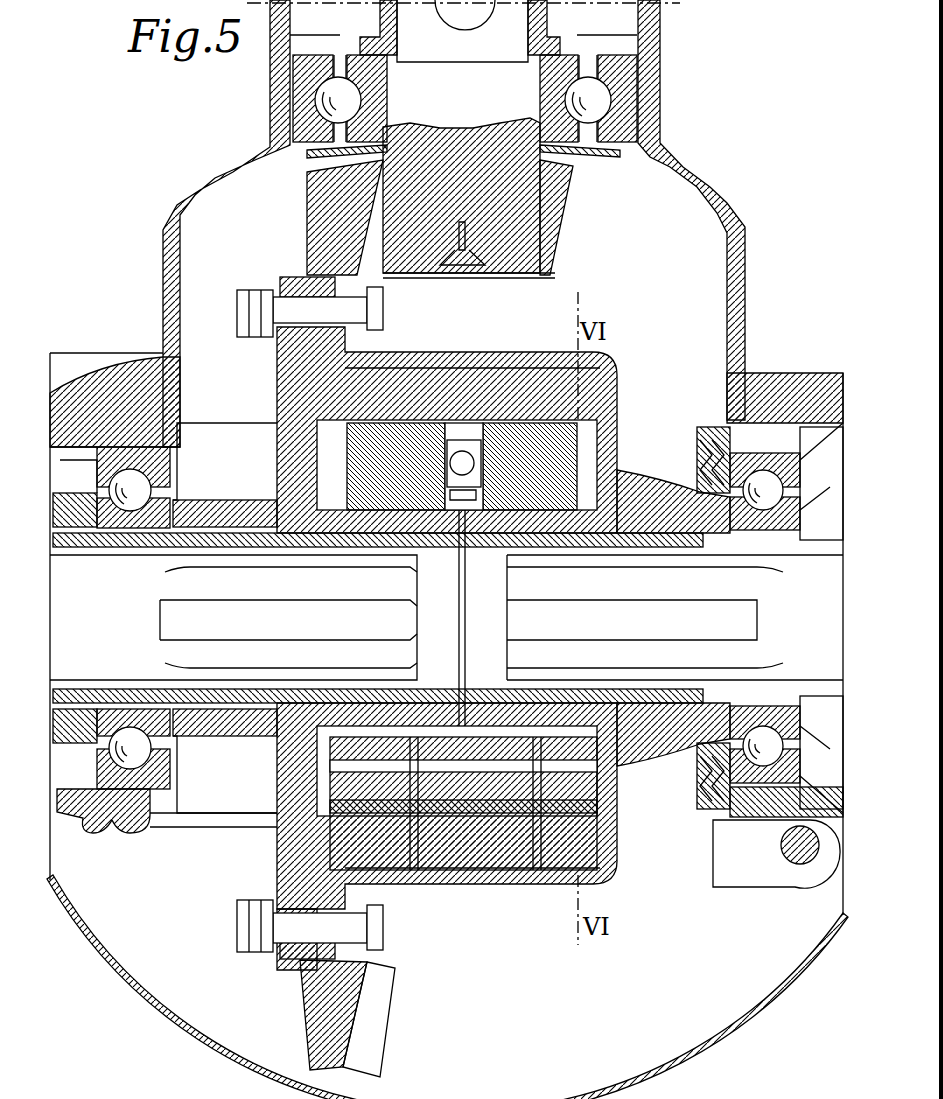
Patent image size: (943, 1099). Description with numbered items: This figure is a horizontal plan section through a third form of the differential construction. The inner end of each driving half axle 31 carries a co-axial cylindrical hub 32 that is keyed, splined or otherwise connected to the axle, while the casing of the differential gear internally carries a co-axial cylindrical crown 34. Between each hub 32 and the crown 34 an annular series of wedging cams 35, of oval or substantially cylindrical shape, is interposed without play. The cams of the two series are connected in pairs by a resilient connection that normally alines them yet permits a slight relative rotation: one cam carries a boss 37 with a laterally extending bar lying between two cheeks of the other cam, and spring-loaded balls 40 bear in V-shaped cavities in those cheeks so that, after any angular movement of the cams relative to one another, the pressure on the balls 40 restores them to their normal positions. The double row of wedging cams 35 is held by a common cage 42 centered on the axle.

The driving half axle 31 is at (190, 580).
The co-axial cylindrical hub 32 is at (390, 528).
The co-axial cylindrical crown 34 is at (473, 848).
The wedging cams 35 is at (400, 468).
The boss 37 is at (457, 515).
The balls 40 is at (463, 462).
The cage 42 is at (414, 782).